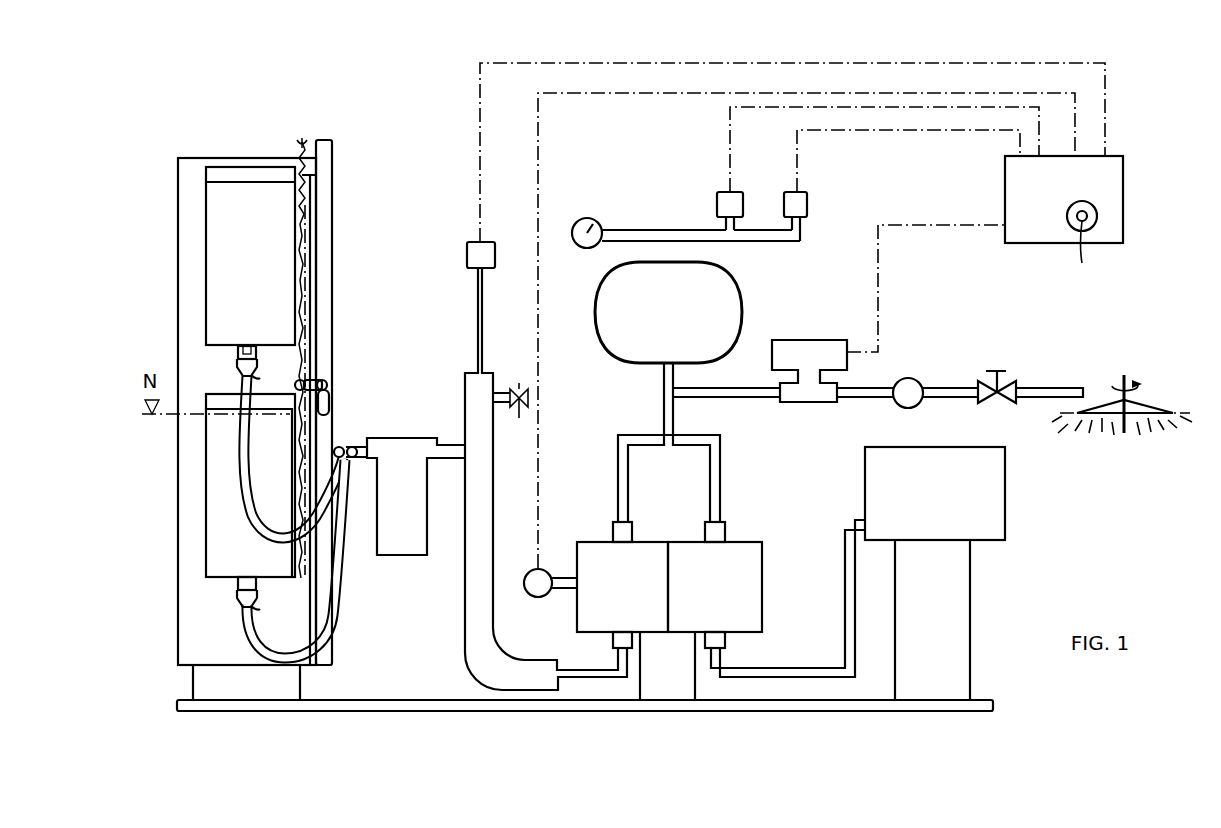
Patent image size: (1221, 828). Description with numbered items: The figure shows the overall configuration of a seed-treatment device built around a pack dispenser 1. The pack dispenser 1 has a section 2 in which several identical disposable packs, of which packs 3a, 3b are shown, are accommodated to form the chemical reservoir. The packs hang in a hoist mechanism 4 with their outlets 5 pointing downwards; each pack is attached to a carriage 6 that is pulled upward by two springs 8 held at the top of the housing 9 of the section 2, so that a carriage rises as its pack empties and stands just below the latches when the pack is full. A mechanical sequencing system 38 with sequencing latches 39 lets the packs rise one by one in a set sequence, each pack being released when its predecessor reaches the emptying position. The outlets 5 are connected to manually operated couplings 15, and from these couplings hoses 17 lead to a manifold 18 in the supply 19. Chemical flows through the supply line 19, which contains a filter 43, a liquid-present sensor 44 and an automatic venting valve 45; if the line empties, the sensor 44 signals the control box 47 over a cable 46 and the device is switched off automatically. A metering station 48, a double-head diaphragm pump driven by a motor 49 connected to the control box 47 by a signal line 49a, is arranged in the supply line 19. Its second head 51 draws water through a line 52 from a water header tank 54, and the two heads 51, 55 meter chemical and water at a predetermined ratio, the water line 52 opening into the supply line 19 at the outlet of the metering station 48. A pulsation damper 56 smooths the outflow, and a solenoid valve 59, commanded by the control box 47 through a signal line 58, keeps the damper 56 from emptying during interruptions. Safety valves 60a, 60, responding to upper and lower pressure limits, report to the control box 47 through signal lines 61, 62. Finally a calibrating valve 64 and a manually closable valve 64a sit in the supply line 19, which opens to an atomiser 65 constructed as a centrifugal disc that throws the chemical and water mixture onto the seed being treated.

The pack dispenser 1 is at (188, 138).
The section 2 is at (178, 170).
The pack 3a is at (216, 497).
The pack 3b is at (222, 238).
The hoist mechanism 4 is at (358, 160).
The outlet 5 is at (238, 352).
The carriage 6 is at (237, 168).
The spring 8 is at (318, 200).
The housing 9 is at (333, 163).
The coupling 15 is at (238, 364).
The hose 17 is at (240, 445).
The manifold 18 is at (346, 447).
The supply line 19 is at (448, 445).
The mechanical sequencing system 38 is at (360, 384).
The sequencing latch 39 is at (320, 384).
The filter 43 is at (397, 556).
The liquid-present sensor 44 is at (475, 243).
The automatic venting valve 45 is at (511, 415).
The cable 46 is at (480, 143).
The control box 47 is at (1110, 175).
The metering station 48 is at (770, 524).
The motor 49 is at (540, 583).
The signal line 49a is at (540, 450).
The second head 51 is at (750, 610).
The line 52 is at (719, 465).
The water header tank 54 is at (1005, 507).
The head 55 is at (590, 620).
The pulsation damper 56 is at (630, 345).
The signal line 58 is at (880, 260).
The solenoid valve 59 is at (800, 350).
The safety valve 60 is at (720, 200).
The safety valve 60a is at (805, 205).
The signal line 61 is at (800, 148).
The signal line 62 is at (730, 142).
The calibrating valve 64 is at (908, 385).
The manually closable valve 64a is at (1000, 378).
The atomiser 65 is at (1165, 412).